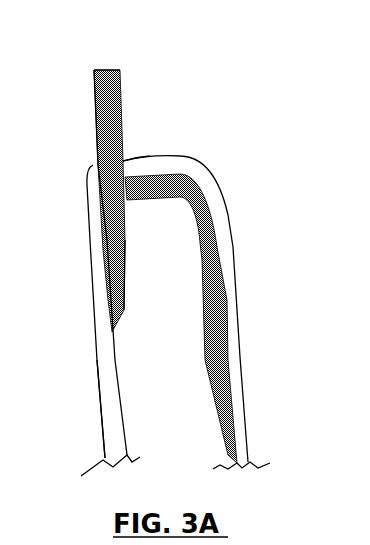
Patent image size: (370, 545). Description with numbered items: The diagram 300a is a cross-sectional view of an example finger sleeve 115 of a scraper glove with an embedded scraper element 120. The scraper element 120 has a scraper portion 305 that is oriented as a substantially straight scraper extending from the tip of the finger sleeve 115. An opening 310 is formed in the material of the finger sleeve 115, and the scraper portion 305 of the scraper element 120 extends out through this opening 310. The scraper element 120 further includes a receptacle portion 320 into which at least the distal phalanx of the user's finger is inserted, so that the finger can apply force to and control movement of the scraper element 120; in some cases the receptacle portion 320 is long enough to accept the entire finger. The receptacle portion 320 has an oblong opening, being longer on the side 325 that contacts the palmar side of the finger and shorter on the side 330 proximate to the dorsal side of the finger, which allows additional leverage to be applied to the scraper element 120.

The diagram 300a is at (190, 250).
The scraper element 120 is at (88, 110).
The scraper portion 305 is at (129, 66).
The opening 310 is at (132, 151).
The receptacle portion 320 is at (215, 245).
The palmar side of receptacle portion 325 is at (196, 286).
The dorsal side of receptacle portion 330 is at (127, 289).
The finger sleeve 115 is at (95, 387).